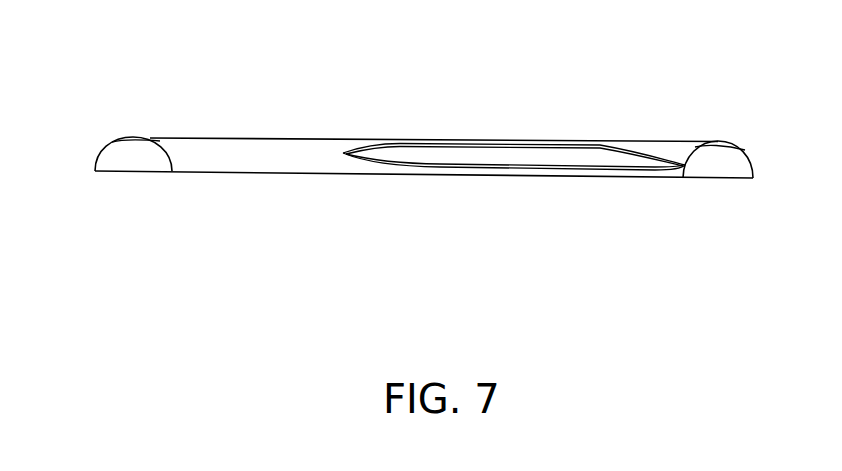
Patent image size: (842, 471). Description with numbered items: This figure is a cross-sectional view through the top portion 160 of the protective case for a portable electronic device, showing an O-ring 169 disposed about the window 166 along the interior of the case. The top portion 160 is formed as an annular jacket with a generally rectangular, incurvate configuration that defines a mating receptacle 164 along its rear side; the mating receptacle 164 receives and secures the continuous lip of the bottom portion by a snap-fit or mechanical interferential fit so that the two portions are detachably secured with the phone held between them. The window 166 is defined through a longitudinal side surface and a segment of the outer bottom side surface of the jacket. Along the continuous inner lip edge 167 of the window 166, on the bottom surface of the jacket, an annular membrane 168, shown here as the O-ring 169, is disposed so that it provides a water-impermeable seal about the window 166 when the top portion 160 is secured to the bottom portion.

The top portion 160 is at (247, 138).
The mating receptacle 164 is at (130, 160).
The window 166 is at (475, 160).
The continuous inner lip edge 167 is at (567, 145).
The annular membrane 168 is at (445, 147).
The O-ring 169 is at (514, 107).